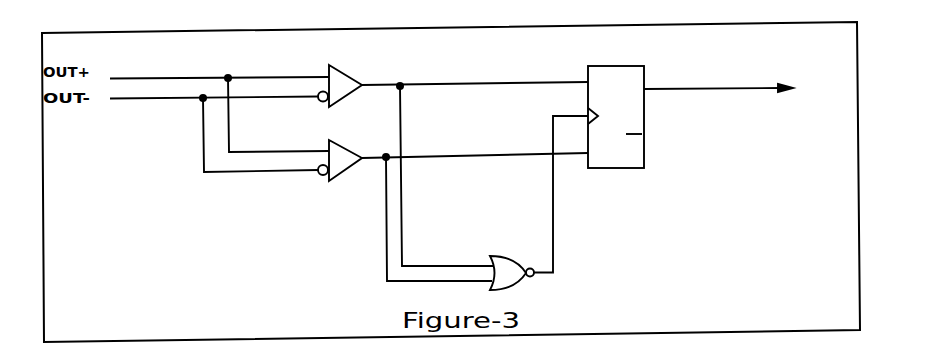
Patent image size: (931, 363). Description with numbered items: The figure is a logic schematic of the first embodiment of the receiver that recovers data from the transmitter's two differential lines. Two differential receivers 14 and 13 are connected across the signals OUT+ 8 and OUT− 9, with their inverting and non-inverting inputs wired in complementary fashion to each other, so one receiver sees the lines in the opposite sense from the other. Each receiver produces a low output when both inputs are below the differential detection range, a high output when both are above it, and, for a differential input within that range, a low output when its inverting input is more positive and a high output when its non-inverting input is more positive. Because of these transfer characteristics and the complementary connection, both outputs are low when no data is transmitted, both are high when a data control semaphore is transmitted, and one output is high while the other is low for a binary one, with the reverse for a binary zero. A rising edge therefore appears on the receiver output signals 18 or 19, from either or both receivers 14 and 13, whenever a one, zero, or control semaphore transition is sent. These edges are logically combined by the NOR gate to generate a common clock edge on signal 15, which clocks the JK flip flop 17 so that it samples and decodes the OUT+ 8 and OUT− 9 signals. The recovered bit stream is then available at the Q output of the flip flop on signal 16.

The OUT+ signal 8 is at (159, 73).
The OUT− signal 9 is at (176, 104).
The differential receiver 13 is at (344, 152).
The differential receiver 14 is at (344, 77).
The clock edge signal 15 is at (559, 201).
The recovered bit stream signal 16 is at (688, 83).
The JK flip flop 17 is at (616, 105).
The receiver output signal 18 is at (464, 79).
The receiver output signal 19 is at (471, 148).